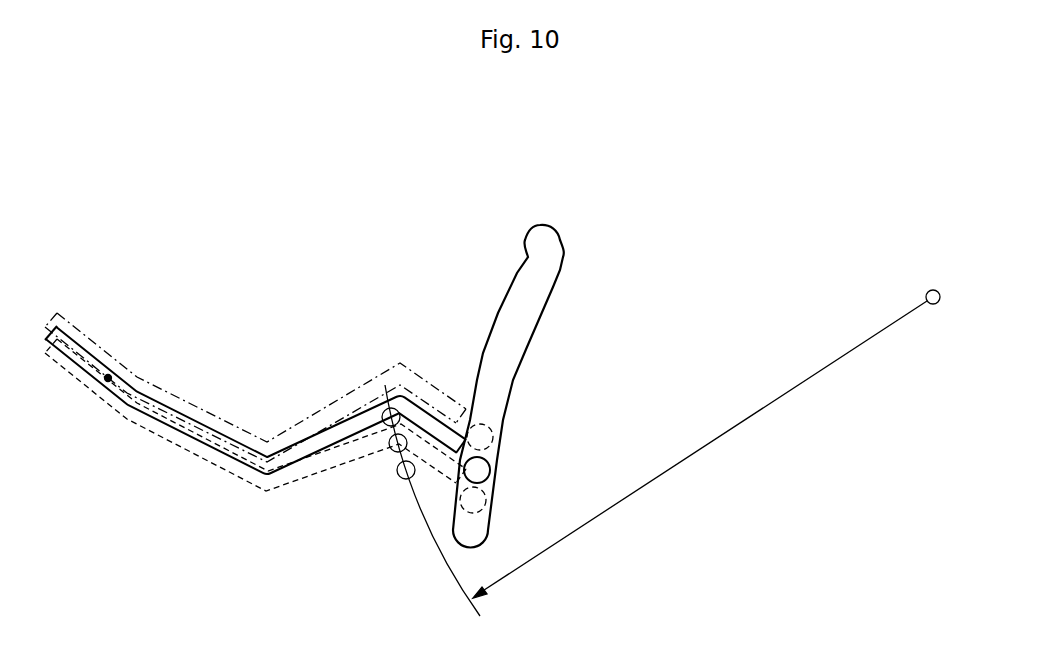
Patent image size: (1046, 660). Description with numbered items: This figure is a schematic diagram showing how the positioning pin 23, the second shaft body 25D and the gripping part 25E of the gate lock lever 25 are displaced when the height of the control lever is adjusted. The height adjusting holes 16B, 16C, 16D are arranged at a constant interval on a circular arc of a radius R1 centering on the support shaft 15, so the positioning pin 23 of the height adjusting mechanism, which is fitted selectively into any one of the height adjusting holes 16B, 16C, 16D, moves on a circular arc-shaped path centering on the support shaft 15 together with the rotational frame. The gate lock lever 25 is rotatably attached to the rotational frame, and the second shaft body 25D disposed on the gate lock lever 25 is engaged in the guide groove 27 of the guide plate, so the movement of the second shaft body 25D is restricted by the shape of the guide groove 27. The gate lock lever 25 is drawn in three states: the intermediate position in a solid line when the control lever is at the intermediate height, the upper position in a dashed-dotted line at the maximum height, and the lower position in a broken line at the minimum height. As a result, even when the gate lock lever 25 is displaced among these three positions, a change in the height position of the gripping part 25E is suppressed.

The support shaft 15 is at (937, 304).
The height adjusting hole 16B is at (387, 412).
The height adjusting hole 16C is at (395, 447).
The height adjusting hole 16D is at (406, 480).
The positioning pin 23 is at (400, 400).
The gate lock lever 25 is at (258, 440).
The second shaft body 25D is at (492, 430).
The gripping part 25E is at (102, 367).
The guide groove 27 is at (513, 380).
The radius R1 is at (700, 449).